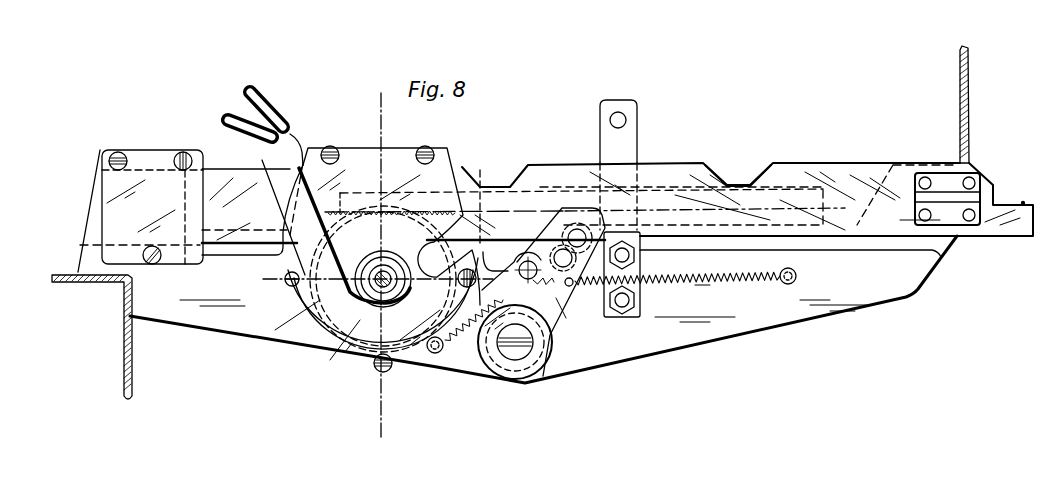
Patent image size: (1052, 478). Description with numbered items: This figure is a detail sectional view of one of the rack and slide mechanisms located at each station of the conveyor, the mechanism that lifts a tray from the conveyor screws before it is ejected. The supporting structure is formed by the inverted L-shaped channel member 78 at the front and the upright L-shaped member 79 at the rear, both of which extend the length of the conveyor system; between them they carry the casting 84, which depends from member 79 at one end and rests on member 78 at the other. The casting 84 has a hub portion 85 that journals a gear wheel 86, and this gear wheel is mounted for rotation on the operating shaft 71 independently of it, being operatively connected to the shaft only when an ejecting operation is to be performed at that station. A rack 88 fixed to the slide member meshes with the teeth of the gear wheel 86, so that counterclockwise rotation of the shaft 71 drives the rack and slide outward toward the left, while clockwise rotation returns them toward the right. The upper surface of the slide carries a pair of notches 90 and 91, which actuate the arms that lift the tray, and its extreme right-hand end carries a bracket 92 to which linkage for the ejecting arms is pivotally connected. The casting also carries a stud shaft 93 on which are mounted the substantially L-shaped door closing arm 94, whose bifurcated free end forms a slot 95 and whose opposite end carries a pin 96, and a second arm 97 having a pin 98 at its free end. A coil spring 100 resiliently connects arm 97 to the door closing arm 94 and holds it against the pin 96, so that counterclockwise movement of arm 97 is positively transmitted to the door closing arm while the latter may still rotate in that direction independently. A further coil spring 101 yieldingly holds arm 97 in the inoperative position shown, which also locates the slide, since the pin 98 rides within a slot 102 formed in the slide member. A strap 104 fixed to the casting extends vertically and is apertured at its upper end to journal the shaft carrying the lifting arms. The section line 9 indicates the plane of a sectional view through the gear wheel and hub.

The section line 9- 9 is at (413, 424).
The operating shaft 71 is at (360, 322).
The inverted L-shaped channel member 78 is at (123, 333).
The upright L-shaped member 79 is at (963, 87).
The casting 84 is at (907, 272).
The hub portion 85 is at (280, 305).
The gear wheel 86 is at (348, 165).
The rack 88 is at (670, 185).
The notch 90 is at (478, 170).
The notch 91 is at (758, 180).
The bracket 92 is at (942, 193).
The stud shaft 93 is at (541, 380).
The door closing arm 94 is at (356, 330).
The slot 95 is at (243, 100).
The pin 96 is at (530, 262).
The second arm 97 is at (580, 320).
The pin 98 is at (577, 229).
The coil spring 100 is at (576, 298).
The coil spring 101 is at (737, 283).
The slot 102 is at (590, 206).
The strap 104 is at (602, 100).